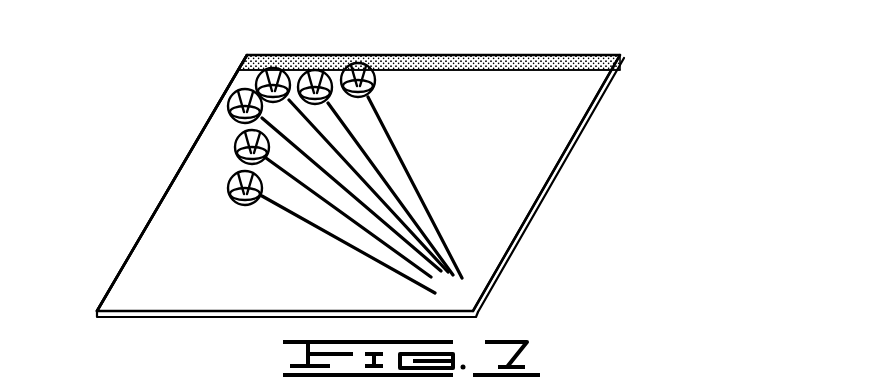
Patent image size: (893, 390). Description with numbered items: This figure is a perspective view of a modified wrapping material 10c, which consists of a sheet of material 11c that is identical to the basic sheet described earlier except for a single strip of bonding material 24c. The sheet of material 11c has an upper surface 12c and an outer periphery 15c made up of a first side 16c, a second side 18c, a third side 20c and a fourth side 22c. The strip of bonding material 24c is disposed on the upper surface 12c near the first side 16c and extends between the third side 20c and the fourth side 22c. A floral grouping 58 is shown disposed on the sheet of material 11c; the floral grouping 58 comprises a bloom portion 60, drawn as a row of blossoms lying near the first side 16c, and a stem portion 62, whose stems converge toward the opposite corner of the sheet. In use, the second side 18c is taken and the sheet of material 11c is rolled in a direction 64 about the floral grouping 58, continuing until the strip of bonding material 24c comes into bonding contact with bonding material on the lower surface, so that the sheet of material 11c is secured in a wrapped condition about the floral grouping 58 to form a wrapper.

The wrapping material 10c is at (428, 192).
The sheet of material 11c is at (200, 119).
The upper surface 12c is at (487, 215).
The outer periphery 15c is at (593, 109).
The first side 16c is at (412, 62).
The second side 18c is at (258, 317).
The third side 20c is at (181, 165).
The fourth side 22c is at (562, 163).
The strip of bonding material 24c is at (513, 63).
The floral grouping 58 is at (416, 147).
The bloom portion 60 is at (288, 77).
The stem portion 62 is at (460, 263).
The direction 64 is at (186, 263).